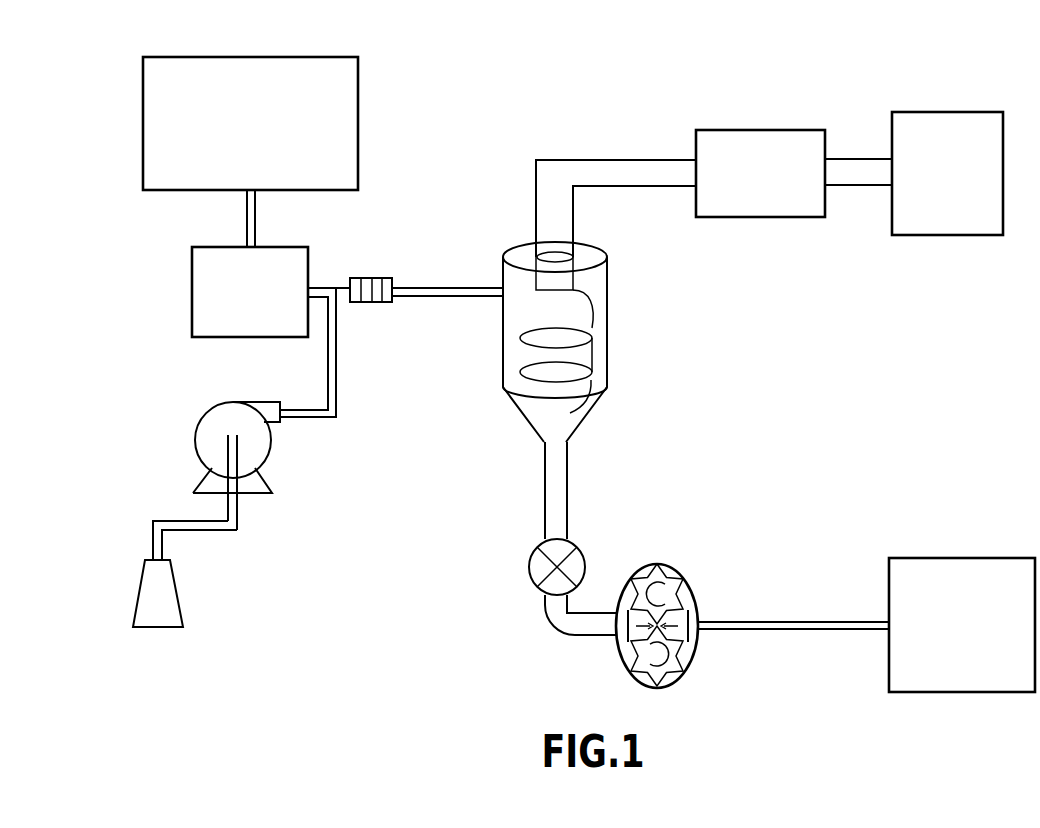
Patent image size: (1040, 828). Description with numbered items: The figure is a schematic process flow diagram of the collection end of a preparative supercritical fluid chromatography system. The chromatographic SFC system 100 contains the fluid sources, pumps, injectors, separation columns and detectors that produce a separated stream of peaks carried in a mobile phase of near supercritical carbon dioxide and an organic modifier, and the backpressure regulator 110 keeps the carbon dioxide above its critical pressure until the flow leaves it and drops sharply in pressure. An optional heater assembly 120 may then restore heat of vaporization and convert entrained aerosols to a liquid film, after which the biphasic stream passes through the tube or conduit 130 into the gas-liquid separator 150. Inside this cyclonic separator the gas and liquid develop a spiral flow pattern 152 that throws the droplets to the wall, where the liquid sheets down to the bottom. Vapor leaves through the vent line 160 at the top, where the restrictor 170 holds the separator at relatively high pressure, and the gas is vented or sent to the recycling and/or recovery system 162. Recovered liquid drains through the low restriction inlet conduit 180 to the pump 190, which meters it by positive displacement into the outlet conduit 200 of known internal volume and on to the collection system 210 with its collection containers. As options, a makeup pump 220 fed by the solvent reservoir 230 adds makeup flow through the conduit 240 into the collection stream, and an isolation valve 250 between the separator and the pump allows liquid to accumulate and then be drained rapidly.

The chromatographic SFC system 100 is at (358, 110).
The backpressure regulator 110 is at (220, 337).
The heater assembly 120 is at (373, 302).
The tube or conduit 130 is at (440, 288).
The gas-liquid separator 150 is at (608, 293).
The spiral flow pattern 152 is at (590, 375).
The vent line 160 is at (587, 160).
The recycling and/or recovery system 162 is at (950, 112).
The restrictor 170 is at (750, 130).
The inlet conduit 180 is at (545, 482).
The pump 190 is at (680, 566).
The outlet conduit 200 is at (807, 622).
The collection system 210 is at (945, 558).
The makeup pump 220 is at (270, 478).
The solvent reservoir 230 is at (177, 590).
The conduit 240 is at (338, 392).
The isolation valve 250 is at (529, 572).